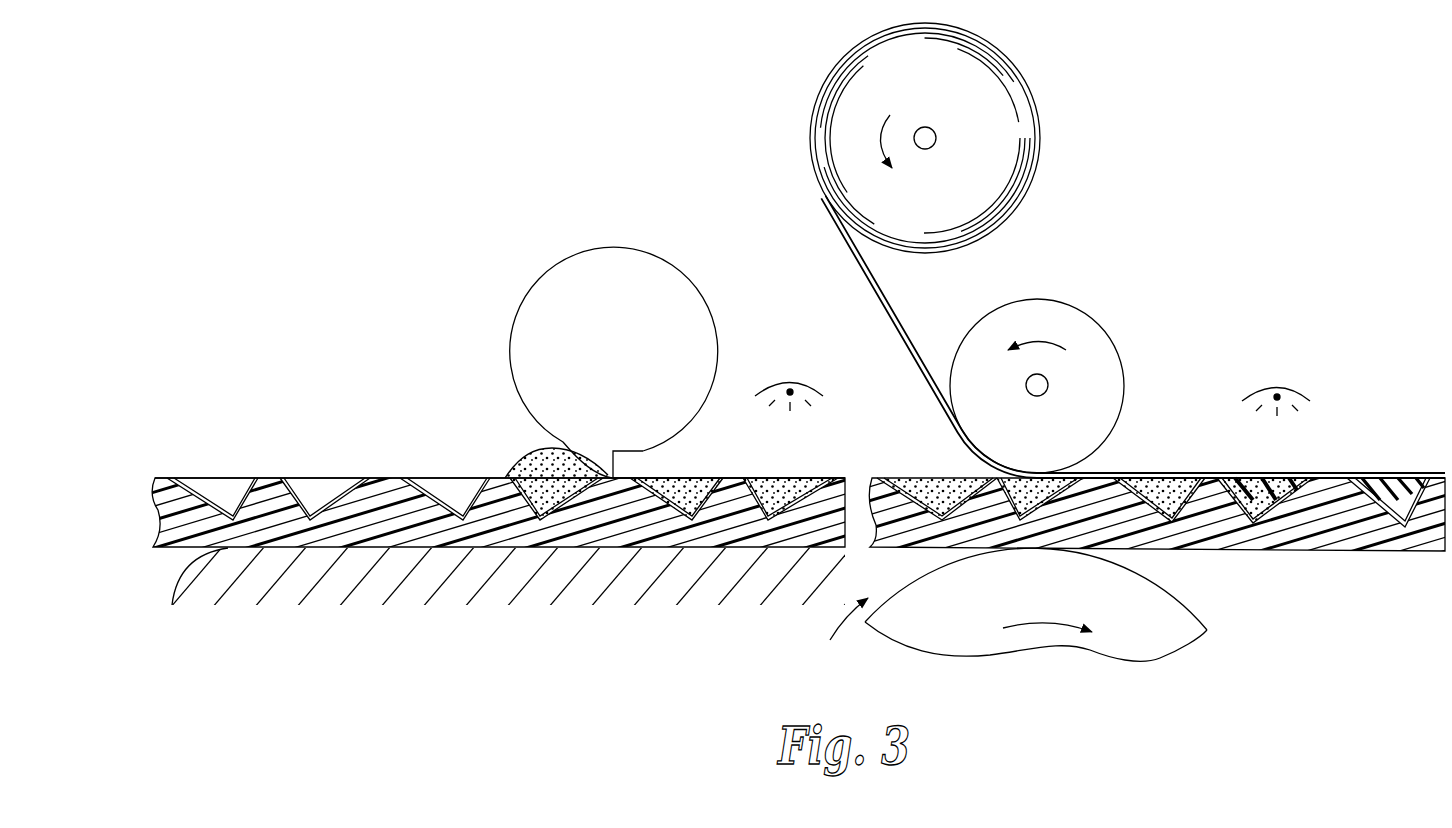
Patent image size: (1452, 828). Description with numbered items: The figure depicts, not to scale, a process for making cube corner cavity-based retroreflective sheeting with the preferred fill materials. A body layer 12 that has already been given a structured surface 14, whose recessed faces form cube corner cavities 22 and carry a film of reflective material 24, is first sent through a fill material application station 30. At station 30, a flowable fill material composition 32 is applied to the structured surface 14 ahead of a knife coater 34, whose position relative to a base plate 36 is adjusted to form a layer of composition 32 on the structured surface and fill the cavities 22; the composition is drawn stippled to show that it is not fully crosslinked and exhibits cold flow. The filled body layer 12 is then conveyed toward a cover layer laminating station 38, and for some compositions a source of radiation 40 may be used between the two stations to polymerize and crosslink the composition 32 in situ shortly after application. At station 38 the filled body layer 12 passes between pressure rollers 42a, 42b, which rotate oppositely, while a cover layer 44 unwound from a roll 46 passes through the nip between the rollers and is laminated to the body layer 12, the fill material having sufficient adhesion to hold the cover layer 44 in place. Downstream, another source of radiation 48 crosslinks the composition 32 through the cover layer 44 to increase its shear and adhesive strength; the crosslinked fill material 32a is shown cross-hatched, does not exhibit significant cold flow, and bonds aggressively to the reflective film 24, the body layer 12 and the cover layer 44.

The body layer 12 is at (158, 510).
The structured surface 14 is at (230, 465).
The cube corner cavities 22 is at (427, 476).
The film of reflective material 24 is at (188, 478).
The fill material application station 30 is at (411, 343).
The fill material composition 32 is at (527, 462).
The crosslinked fill material 32a is at (1395, 490).
The knife coater 34 is at (598, 326).
The base plate 36 is at (327, 597).
The cover layer laminating station 38 is at (839, 634).
The source of radiation 40 is at (778, 386).
The pressure roller 42a is at (1012, 438).
The pressure roller 42b is at (1016, 603).
The cover layer 44 is at (873, 288).
The roll 46 is at (913, 101).
The source of radiation 48 is at (1256, 390).